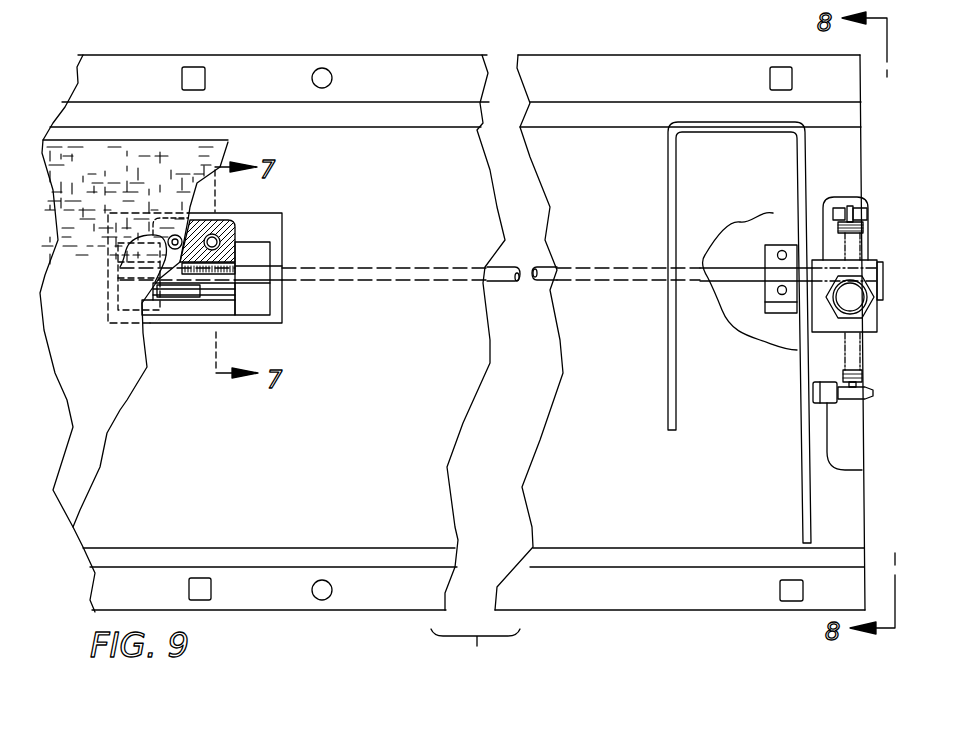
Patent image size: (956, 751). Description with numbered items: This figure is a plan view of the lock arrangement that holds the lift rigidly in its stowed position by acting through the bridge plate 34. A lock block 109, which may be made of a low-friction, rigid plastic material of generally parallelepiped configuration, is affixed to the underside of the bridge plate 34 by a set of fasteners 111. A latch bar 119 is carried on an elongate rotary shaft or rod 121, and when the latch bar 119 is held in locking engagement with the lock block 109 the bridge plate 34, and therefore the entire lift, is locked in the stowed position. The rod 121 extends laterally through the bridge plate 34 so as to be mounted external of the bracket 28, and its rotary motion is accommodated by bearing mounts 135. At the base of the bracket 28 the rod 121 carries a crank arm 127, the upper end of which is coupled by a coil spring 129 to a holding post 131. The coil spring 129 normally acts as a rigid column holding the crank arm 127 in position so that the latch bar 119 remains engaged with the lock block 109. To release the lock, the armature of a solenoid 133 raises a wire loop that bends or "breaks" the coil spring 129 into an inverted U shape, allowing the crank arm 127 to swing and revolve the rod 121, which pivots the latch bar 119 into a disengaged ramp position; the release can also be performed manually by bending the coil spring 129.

The bracket 28 is at (668, 171).
The bridge plate 34 is at (105, 437).
The lock block 109 is at (237, 230).
The fasteners 111 is at (120, 267).
The latch bar 119 is at (207, 274).
The rotary shaft or rod 121 is at (257, 268).
The crank arm 127 is at (868, 233).
The coil spring 129 is at (875, 390).
The holding post 131 is at (827, 397).
The solenoid 133 is at (862, 307).
The bearing mounts 135 is at (263, 307).